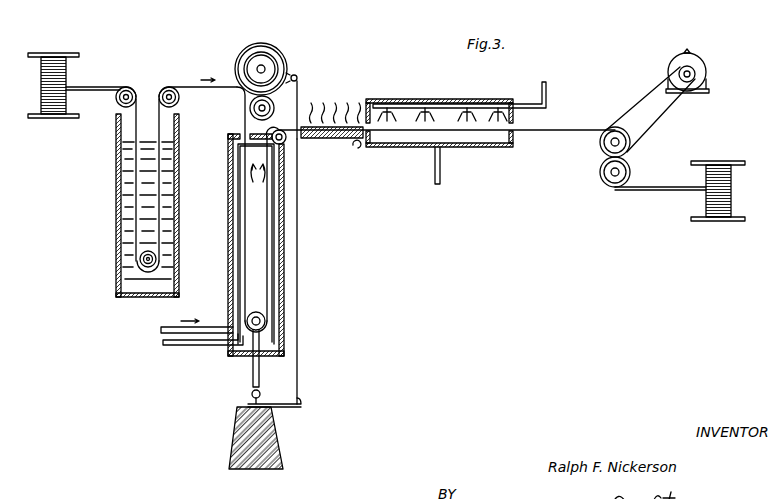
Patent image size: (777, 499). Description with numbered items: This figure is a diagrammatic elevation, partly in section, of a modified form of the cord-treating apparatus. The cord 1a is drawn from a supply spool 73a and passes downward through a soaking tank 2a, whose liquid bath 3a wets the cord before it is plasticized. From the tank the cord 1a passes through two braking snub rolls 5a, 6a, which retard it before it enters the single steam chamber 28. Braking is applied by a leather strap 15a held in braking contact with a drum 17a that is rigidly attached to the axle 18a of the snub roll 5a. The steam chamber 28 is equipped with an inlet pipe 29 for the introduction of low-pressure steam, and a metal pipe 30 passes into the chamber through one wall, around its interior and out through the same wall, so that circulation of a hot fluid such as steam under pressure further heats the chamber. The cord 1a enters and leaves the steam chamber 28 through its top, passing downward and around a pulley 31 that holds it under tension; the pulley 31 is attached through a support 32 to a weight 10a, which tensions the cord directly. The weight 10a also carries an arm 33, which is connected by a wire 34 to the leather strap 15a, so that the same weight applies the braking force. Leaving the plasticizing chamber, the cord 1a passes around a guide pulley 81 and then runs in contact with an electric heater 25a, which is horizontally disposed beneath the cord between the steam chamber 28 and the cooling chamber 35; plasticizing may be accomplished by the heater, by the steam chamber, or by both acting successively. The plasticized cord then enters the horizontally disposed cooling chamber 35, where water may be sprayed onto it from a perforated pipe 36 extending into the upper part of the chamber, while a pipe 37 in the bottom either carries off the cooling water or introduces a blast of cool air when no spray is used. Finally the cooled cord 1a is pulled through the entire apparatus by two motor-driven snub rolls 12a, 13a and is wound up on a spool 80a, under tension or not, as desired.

The supply spool 73a is at (54, 55).
The cord 1a is at (85, 89).
The soaking tank 2a is at (115, 201).
The liquid in tank 3a is at (122, 168).
The axle 18a is at (262, 68).
The leather strap 15a is at (270, 67).
The braking snub roll 5a is at (296, 79).
The drum 17a is at (297, 94).
The braking snub roll 6a is at (273, 109).
The electric heater 25a is at (338, 140).
The guide pulley 81 is at (282, 145).
The steam chamber 28 is at (227, 187).
The cooling chamber 35 is at (480, 101).
The perforated pipe 36 is at (546, 99).
The pipe 37 is at (439, 166).
The driven snub roll 12a is at (602, 150).
The driven snub roll 13a is at (629, 173).
The spool 80a is at (706, 162).
The pulley 31 is at (266, 319).
The inlet pipe 29 is at (160, 328).
The metal pipe 30 is at (162, 343).
The wire 34 is at (297, 340).
The support 32 is at (252, 372).
The arm 33 is at (293, 404).
The weight 10a is at (280, 445).